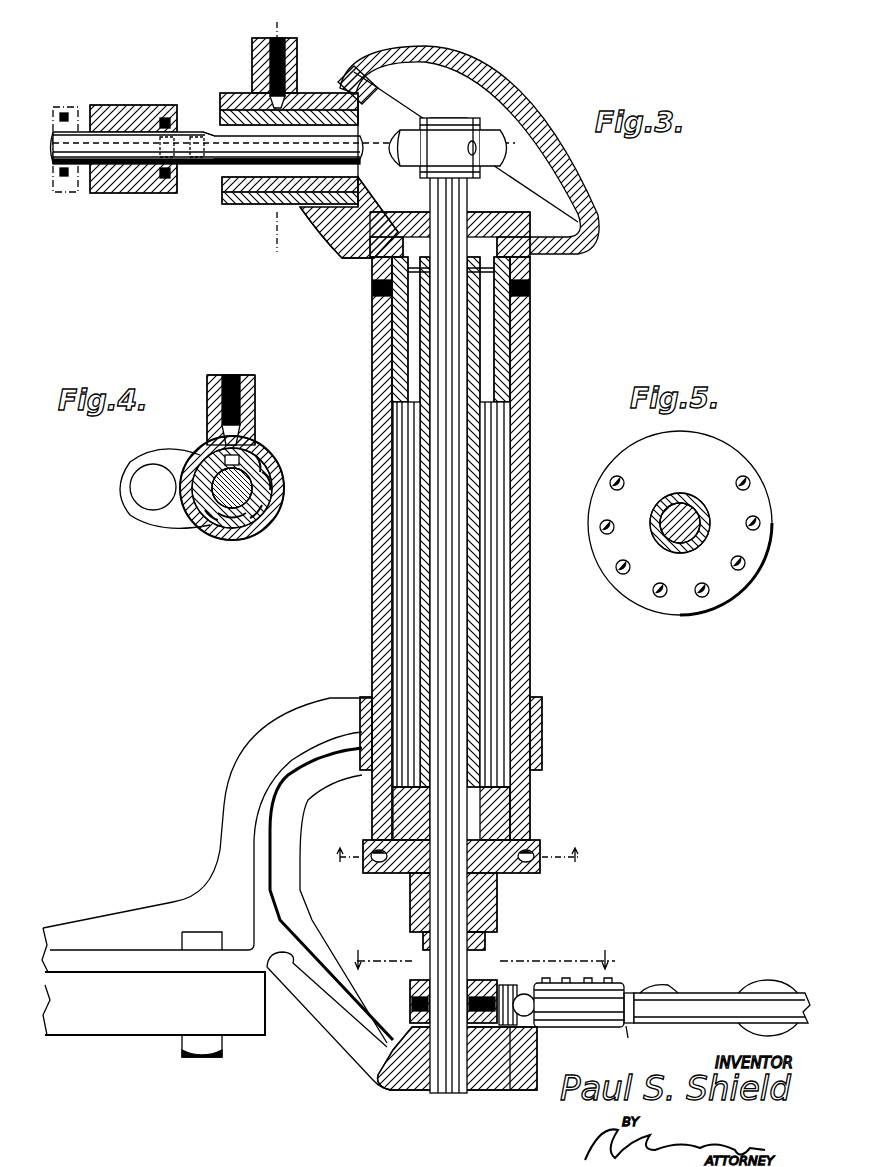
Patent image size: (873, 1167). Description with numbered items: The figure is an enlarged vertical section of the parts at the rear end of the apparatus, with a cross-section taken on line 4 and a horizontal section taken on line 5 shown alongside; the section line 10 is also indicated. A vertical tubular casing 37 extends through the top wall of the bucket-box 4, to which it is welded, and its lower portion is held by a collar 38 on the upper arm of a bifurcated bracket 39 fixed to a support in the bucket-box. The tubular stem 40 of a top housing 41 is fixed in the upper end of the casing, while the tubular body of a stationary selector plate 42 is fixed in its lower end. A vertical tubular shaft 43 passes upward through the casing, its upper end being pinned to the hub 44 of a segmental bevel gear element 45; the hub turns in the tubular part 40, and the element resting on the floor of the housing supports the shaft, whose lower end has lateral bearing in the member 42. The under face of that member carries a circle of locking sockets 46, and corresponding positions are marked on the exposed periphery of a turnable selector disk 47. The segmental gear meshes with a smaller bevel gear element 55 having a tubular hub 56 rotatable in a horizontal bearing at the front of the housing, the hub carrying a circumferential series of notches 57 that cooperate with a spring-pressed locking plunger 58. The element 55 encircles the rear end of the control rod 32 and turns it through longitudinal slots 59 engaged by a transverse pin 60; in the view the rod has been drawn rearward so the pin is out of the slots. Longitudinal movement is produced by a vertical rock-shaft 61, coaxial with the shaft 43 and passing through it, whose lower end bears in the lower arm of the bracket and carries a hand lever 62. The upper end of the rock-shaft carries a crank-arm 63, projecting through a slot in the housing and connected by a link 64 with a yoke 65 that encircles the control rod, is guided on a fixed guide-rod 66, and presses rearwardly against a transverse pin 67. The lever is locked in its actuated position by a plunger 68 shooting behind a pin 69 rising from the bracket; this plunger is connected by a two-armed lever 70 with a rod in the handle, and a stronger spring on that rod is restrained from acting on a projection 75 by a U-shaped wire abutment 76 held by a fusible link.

In FIG. 3, the bucket-box 4 is at (276, 140).
In FIG. 3, the section line 5- 5 is at (456, 857).
In FIG. 3, the section line 10- 10 is at (483, 952).
In FIG. 3, the control rod 32 is at (103, 193).
In FIG. 4, the control rod 32 is at (205, 535).
In FIG. 3, the vertical tubular casing 37 is at (523, 440).
In FIG. 3, the collar 38 is at (545, 735).
In FIG. 3, the bifurcated bracket 39 is at (252, 752).
In FIG. 3, the tubular stem 40 is at (508, 340).
In FIG. 3, the top housing 41 is at (548, 130).
In FIG. 3, the stationary selector plate 42 is at (535, 840).
In FIG. 5, the stationary selector plate 42 is at (725, 450).
In FIG. 3, the vertical tubular shaft 43 is at (485, 632).
In FIG. 5, the vertical tubular shaft 43 is at (680, 493).
In FIG. 3, the hub 44 is at (395, 312).
In FIG. 3, the segmental bevel gear element 45 is at (362, 258).
In FIG. 3, the locking sockets 46 is at (373, 870).
In FIG. 5, the locking sockets 46 is at (660, 597).
In FIG. 3, the turnable selector disk 47 is at (545, 868).
In FIG. 3, the bevel gear element 55 is at (428, 56).
In FIG. 3, the tubular hub 56 is at (225, 190).
In FIG. 3, the notches 57 is at (270, 205).
In FIG. 4, the notches 57 is at (270, 488).
In FIG. 3, the locking plunger 58 is at (248, 92).
In FIG. 4, the locking plunger 58 is at (250, 440).
In FIG. 3, the longitudinal slots 59 is at (220, 118).
In FIG. 4, the longitudinal slots 59 is at (255, 450).
In FIG. 3, the transverse pin 60 is at (248, 205).
In FIG. 3, the rock-shaft 61 is at (470, 958).
In FIG. 5, the rock-shaft 61 is at (670, 540).
In FIG. 3, the hand lever 62 is at (705, 992).
In FIG. 3, the crank-arm 63 is at (500, 152).
In FIG. 3, the link 64 is at (393, 170).
In FIG. 3, the yoke 65 is at (66, 187).
In FIG. 4, the fixed guide-rod 66 is at (160, 500).
In FIG. 3, the transverse pin 67 is at (68, 112).
In FIG. 3, the plunger 68 is at (530, 1025).
In FIG. 3, the pin 69 is at (505, 1090).
In FIG. 3, the two-armed lever 70 is at (640, 975).
In FIG. 3, the projection 75 is at (628, 1038).
In FIG. 3, the abutment 76 is at (665, 985).